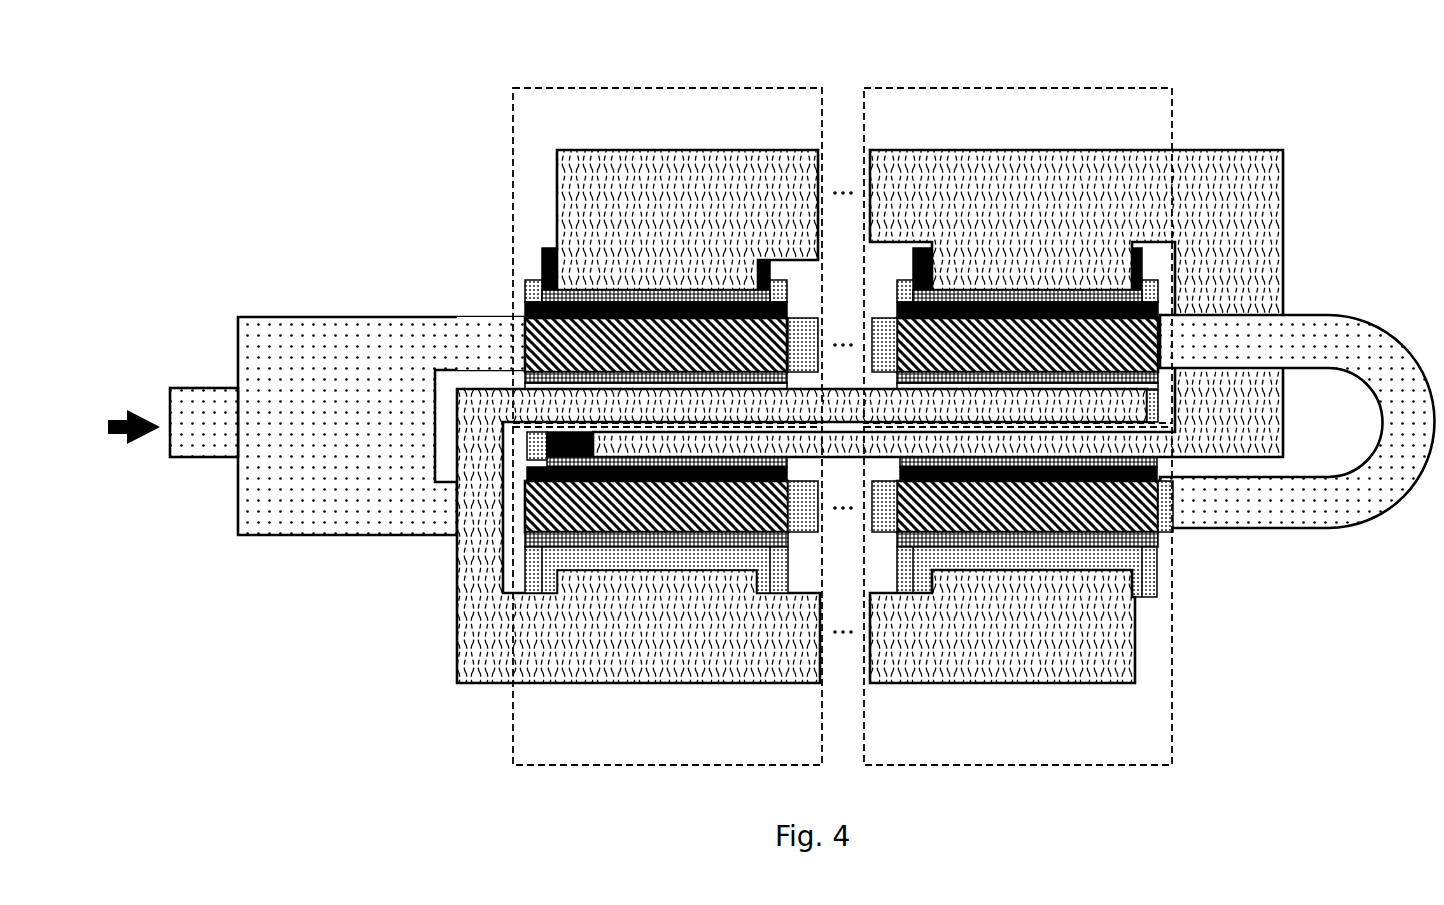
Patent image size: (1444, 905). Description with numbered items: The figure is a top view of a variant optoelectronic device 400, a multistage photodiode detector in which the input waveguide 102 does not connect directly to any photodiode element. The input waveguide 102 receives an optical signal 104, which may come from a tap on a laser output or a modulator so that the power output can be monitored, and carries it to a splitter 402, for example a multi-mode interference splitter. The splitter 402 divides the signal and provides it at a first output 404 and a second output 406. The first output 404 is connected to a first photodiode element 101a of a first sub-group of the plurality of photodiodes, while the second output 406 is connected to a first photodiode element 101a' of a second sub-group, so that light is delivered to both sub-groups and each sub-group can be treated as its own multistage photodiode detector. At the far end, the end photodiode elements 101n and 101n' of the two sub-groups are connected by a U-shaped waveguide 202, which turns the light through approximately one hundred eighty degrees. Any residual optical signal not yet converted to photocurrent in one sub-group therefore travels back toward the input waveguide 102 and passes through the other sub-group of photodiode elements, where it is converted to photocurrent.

The optoelectronic device 400 is at (225, 118).
The splitter 402 is at (277, 310).
The first output 404 is at (474, 330).
The input waveguide 102 is at (200, 407).
The optical signal 104 is at (112, 427).
The second output 406 is at (520, 503).
The U-shaped waveguide 202 is at (1235, 528).
The first photodiode element 101a is at (622, 255).
The end photodiode element 101n is at (975, 222).
The first photodiode element 101a' is at (611, 600).
The end photodiode element 101n' is at (1018, 617).